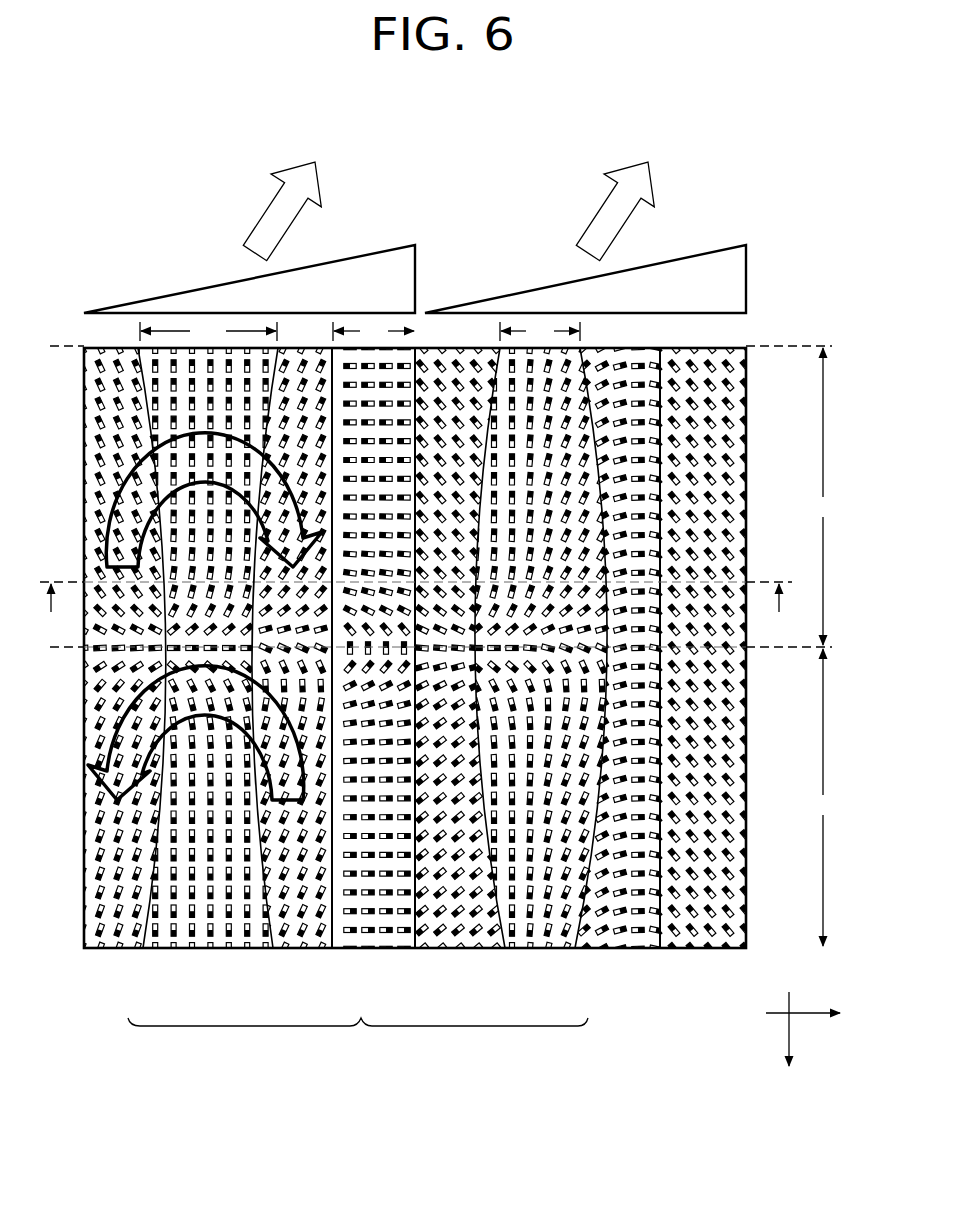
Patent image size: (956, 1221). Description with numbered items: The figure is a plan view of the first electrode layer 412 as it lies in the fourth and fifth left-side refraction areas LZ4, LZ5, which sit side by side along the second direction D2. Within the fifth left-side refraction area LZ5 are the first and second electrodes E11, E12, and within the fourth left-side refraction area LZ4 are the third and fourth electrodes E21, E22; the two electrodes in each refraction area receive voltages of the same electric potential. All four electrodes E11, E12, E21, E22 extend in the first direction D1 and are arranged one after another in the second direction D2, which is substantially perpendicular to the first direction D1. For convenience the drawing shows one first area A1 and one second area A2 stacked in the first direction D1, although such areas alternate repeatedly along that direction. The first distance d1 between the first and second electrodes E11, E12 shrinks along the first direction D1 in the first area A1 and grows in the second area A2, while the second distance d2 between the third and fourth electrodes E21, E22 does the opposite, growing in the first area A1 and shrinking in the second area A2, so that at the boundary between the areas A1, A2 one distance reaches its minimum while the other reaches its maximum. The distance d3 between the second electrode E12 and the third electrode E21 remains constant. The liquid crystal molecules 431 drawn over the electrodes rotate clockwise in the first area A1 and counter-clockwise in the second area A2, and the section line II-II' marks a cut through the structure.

The liquid crystal molecules 431 is at (100, 432).
The first electrode layer 412 is at (358, 1040).
The first electrode E11 is at (143, 948).
The second electrode E12 is at (273, 948).
The third electrode E21 is at (505, 948).
The fourth electrode E22 is at (575, 948).
The fifth left-side refraction area LZ5 is at (188, 281).
The fourth left-side refraction area LZ4 is at (520, 281).
The first distance d1 is at (208, 331).
The second distance d2 is at (540, 331).
The distance between second and third electrodes d3 is at (373, 331).
The first area A1 is at (838, 496).
The second area A2 is at (838, 797).
The section line II is at (51, 613).
The section line II' is at (782, 613).
The first direction D1 is at (789, 1043).
The second direction D2 is at (818, 1014).